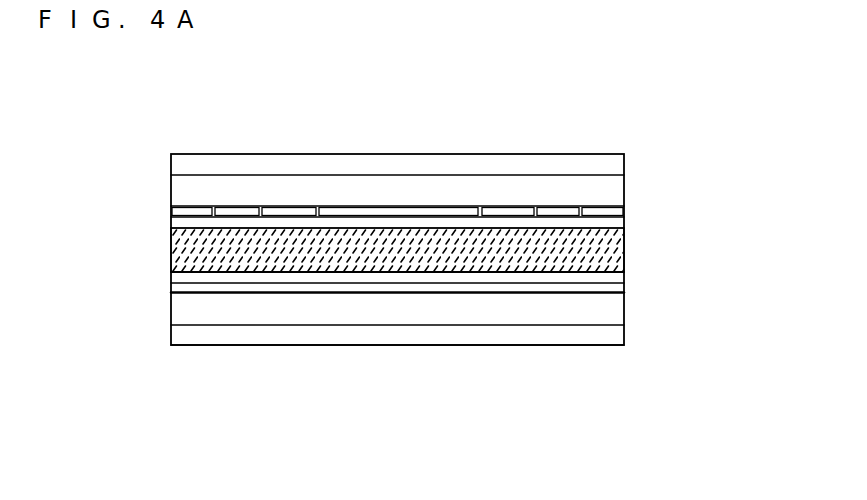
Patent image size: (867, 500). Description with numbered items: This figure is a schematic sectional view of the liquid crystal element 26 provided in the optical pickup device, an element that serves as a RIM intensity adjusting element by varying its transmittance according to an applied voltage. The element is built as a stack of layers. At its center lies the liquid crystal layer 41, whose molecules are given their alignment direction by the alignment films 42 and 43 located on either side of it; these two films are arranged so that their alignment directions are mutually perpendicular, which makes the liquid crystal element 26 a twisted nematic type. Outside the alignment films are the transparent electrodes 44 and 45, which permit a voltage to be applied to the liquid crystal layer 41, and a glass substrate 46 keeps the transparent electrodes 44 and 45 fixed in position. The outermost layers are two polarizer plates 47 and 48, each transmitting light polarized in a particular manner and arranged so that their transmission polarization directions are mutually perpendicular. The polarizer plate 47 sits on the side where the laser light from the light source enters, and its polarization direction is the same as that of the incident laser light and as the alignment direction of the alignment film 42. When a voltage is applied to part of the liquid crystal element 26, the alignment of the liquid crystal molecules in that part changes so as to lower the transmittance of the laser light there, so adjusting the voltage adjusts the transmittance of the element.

The liquid crystal element 26 is at (600, 69).
The liquid crystal layer 41 is at (607, 253).
The alignment film 42 is at (613, 223).
The alignment film 43 is at (613, 277).
The transparent electrode 44 is at (613, 213).
The transparent electrode 45 is at (612, 290).
The glass substrate 46 is at (607, 192).
The polarizer plate 47 is at (580, 163).
The polarizer plate 48 is at (593, 337).